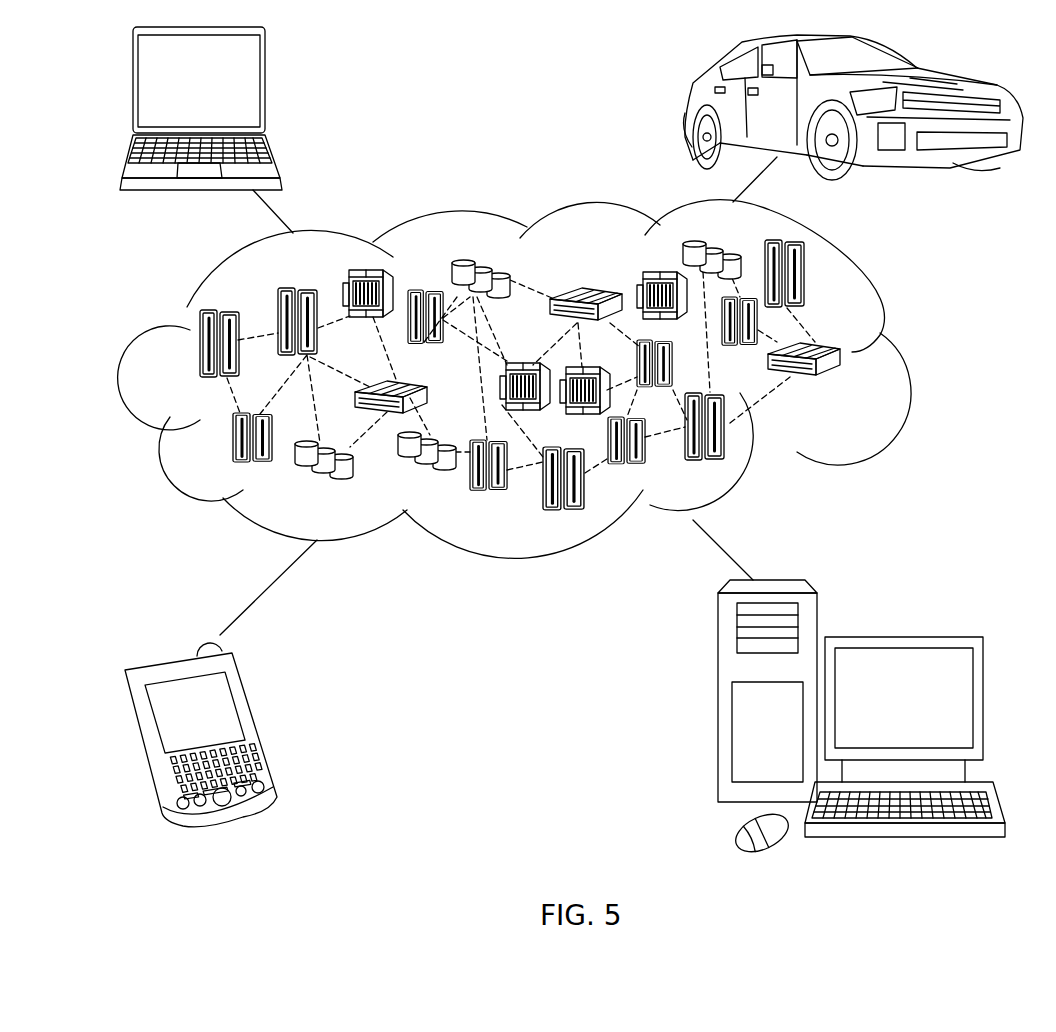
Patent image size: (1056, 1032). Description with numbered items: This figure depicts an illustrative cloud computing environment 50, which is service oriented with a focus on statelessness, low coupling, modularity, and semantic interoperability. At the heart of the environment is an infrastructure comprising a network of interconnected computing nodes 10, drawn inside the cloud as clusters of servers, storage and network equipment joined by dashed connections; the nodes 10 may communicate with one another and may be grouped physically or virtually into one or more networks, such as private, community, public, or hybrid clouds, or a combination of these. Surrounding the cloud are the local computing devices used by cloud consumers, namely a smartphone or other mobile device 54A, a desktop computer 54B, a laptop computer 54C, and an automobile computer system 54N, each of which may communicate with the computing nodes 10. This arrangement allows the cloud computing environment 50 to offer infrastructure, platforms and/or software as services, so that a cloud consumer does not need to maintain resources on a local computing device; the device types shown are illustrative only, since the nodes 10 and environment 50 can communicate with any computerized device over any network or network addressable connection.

The computing node 10 is at (856, 397).
The cloud computing environment 50 is at (902, 358).
The smartphone or other mobile device 54A is at (257, 727).
The desktop computer 54B is at (900, 637).
The laptop computer 54C is at (267, 90).
The automobile computer system 54N is at (690, 107).